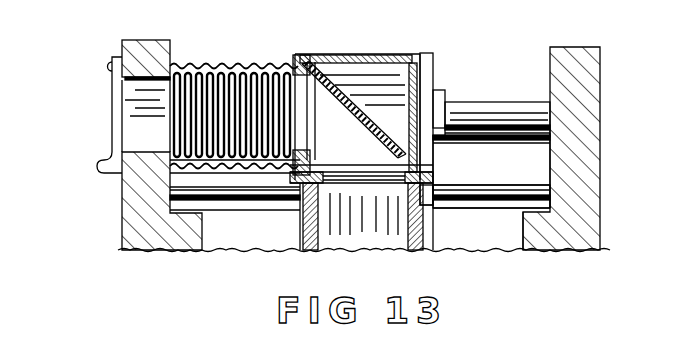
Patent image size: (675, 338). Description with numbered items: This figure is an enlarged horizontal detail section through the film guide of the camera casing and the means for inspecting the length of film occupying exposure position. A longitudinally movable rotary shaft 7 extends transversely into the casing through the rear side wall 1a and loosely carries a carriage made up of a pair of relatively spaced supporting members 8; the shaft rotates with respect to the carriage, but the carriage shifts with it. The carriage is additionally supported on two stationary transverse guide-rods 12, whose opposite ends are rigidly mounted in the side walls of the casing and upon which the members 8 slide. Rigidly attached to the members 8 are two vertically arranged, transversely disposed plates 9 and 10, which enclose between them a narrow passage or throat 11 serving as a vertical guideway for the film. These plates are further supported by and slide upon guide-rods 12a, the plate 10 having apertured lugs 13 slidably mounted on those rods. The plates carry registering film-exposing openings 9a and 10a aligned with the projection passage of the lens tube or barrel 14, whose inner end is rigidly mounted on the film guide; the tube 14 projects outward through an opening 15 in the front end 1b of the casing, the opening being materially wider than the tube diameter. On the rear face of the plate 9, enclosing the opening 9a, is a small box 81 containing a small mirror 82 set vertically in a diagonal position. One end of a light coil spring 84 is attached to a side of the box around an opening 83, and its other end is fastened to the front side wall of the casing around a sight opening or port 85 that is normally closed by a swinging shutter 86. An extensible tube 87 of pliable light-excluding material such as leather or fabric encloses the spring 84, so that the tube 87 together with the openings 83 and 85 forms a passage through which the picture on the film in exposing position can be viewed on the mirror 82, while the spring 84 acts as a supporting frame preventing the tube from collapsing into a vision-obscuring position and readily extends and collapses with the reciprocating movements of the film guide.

The rear side wall 1a is at (600, 113).
The front end 1b is at (193, 250).
The rotary shaft 7 is at (498, 105).
The supporting members 8 is at (433, 66).
The plate 9 is at (440, 174).
The film-exposing opening 9a is at (335, 180).
The plate 10 is at (438, 181).
The film-exposing opening 10a is at (302, 210).
The passage or throat 11 is at (370, 183).
The guide-rods 12 is at (491, 170).
The guide-rods 12a is at (237, 200).
The apertured lugs 13 is at (444, 210).
The lens tube or barrel 14 is at (327, 248).
The opening 15 is at (483, 248).
The box 81 is at (372, 57).
The mirror 82 is at (376, 141).
The opening 83 is at (312, 128).
The coil spring 84 is at (233, 80).
The sight opening or port 85 is at (148, 118).
The swinging shutter 86 is at (112, 117).
The extensible tube 87 is at (208, 66).